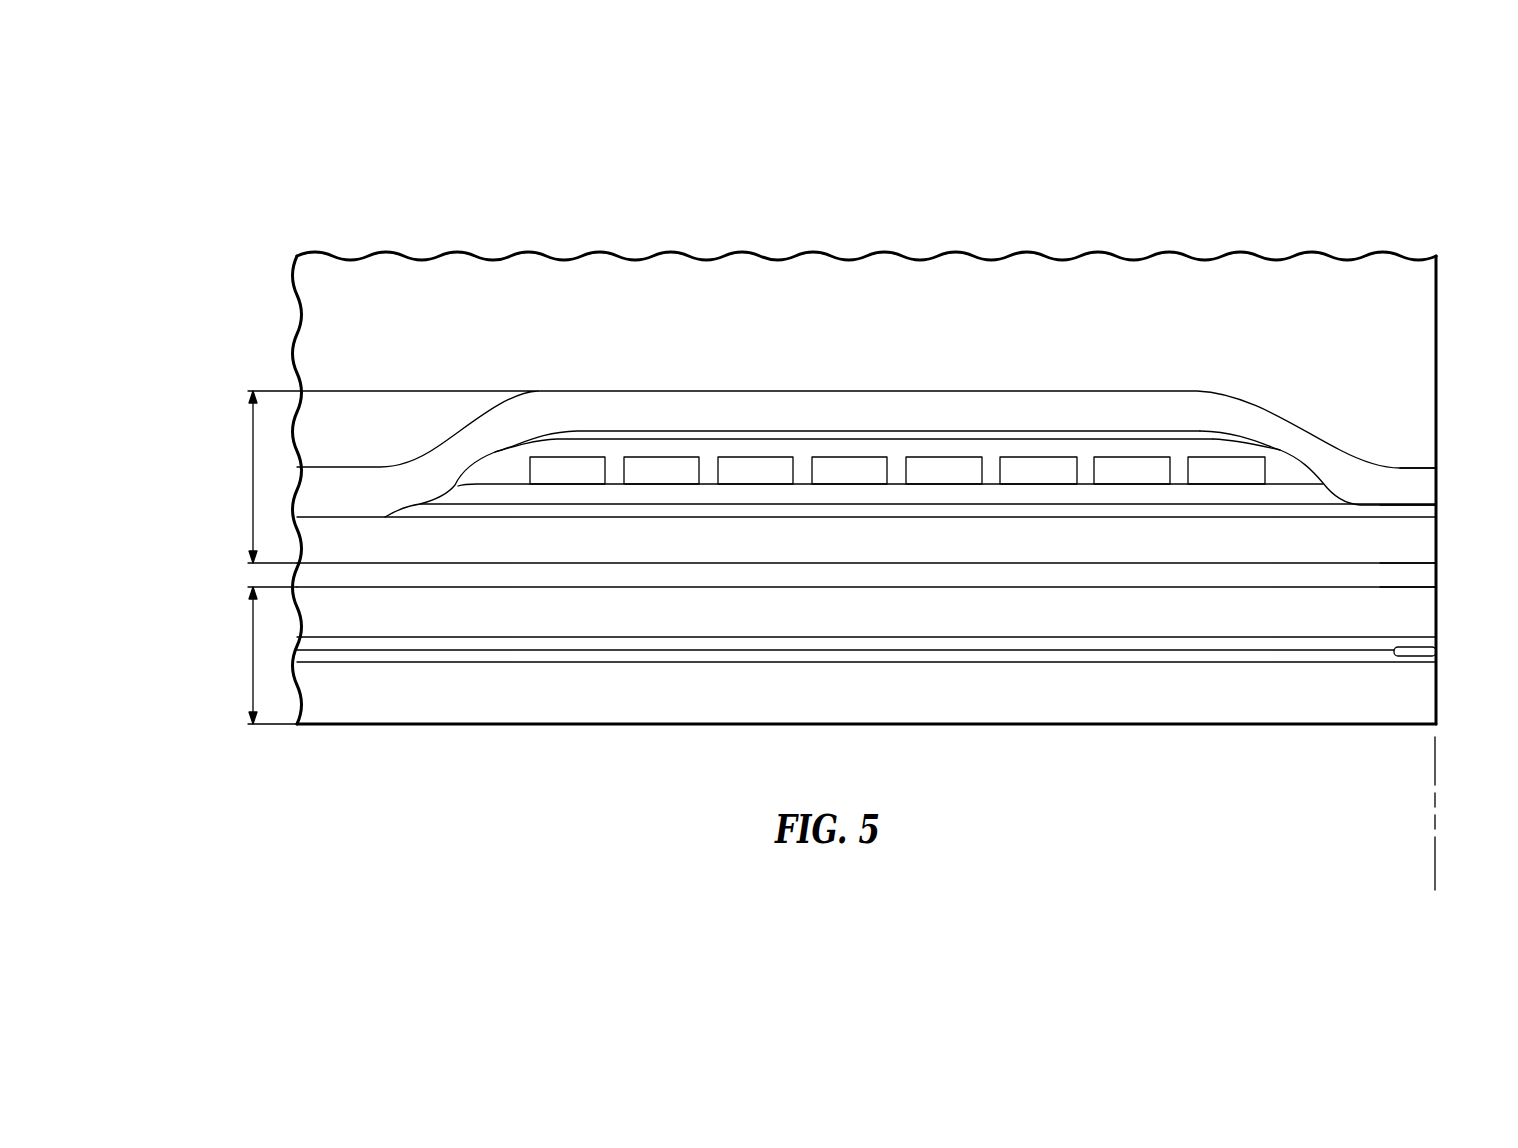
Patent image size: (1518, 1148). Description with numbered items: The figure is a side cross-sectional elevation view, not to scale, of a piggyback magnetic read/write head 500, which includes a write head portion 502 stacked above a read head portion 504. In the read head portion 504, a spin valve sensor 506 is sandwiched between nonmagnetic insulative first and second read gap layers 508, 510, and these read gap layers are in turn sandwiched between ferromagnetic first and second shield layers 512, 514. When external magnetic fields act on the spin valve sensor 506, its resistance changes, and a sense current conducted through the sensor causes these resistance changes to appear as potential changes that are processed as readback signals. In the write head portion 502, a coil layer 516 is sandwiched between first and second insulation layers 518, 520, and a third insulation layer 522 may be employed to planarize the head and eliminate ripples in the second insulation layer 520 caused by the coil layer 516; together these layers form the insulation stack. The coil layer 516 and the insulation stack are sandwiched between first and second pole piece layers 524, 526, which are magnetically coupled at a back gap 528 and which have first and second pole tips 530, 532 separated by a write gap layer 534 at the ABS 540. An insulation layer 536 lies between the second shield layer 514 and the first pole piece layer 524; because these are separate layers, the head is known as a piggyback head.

The magnetic read/write head 500 is at (320, 183).
The write head portion 502 is at (252, 469).
The read head portion 504 is at (252, 643).
The spin valve sensor 506 is at (1436, 651).
The first read gap layer 508 is at (948, 664).
The second read gap layer 510 is at (925, 635).
The first shield layer 512 is at (1104, 716).
The second shield layer 514 is at (1217, 625).
The coil layer 516 is at (843, 463).
The first insulation layer 518 is at (704, 494).
The second insulation layer 520 is at (1287, 468).
The third insulation layer 522 is at (626, 432).
The first pole piece layer 524 is at (1271, 550).
The second pole piece layer 526 is at (1103, 397).
The back gap 528 is at (333, 517).
The first pole tip 530 is at (1437, 540).
The second pole tip 532 is at (1437, 485).
The write gap layer 534 is at (1437, 511).
The insulation layer 536 is at (1432, 575).
The ABS 540 is at (1435, 857).